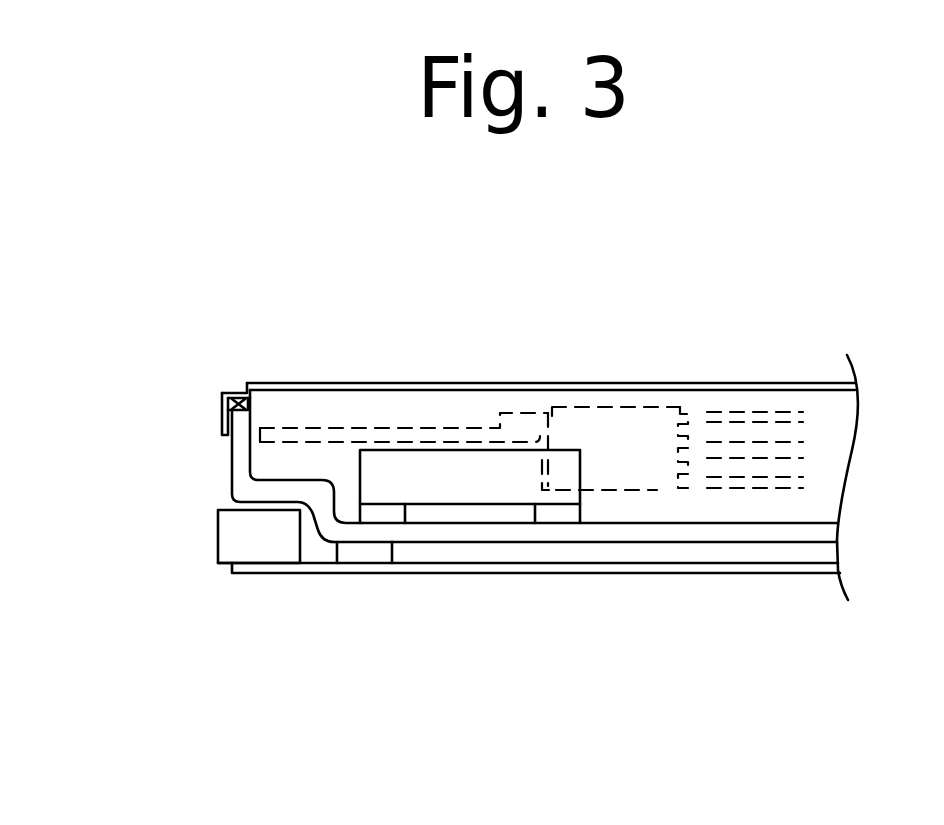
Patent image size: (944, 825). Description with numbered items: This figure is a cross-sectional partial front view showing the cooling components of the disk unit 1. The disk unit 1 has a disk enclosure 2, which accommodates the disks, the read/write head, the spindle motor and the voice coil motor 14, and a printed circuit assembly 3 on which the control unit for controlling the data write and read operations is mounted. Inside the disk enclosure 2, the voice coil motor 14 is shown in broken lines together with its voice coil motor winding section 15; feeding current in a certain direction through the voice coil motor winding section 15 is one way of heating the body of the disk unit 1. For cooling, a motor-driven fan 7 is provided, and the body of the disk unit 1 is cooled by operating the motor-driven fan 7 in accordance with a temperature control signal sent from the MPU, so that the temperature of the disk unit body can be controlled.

The disk unit 1 is at (308, 357).
The disk enclosure 2 is at (218, 413).
The printed circuit assembly 3 is at (510, 562).
The motor-driven fan 7 is at (392, 490).
The voice coil motor 14 is at (577, 410).
The voice coil motor winding section 15 is at (427, 437).